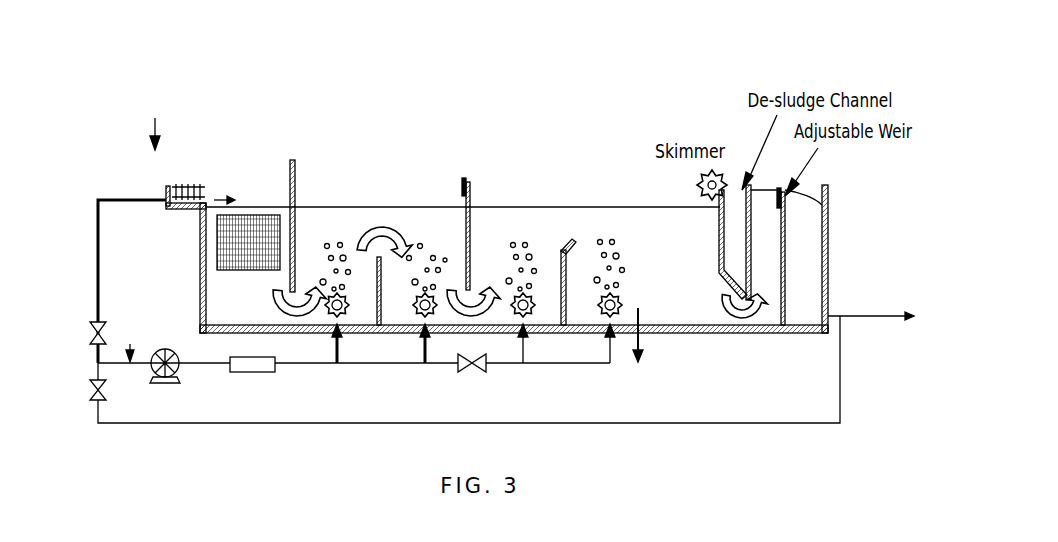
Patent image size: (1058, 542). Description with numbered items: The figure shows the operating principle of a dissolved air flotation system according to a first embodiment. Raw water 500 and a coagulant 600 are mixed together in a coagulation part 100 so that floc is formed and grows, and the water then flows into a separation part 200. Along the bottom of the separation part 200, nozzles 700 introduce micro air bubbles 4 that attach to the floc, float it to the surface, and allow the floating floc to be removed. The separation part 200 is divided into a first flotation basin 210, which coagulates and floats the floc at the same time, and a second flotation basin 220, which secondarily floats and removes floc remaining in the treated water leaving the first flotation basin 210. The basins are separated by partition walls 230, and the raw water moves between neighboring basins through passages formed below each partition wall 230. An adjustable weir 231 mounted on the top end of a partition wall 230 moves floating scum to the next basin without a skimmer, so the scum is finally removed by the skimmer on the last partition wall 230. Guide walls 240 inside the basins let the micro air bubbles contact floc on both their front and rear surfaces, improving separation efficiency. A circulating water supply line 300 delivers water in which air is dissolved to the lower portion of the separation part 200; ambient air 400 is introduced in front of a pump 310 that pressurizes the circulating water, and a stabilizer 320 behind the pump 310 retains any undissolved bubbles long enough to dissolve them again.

The micro air bubbles 4 is at (327, 246).
The coagulation part 100 is at (288, 78).
The separation part 200 is at (823, 78).
The first flotation basin 210 is at (380, 186).
The second flotation basin 220 is at (620, 166).
The partition wall 230 is at (471, 228).
The adjustable weir 231 is at (474, 172).
The guide wall 240 is at (383, 272).
The circulating water supply line 300 is at (692, 423).
The pump 310 is at (168, 382).
The stabilizer 320 is at (252, 373).
The ambient air 400 is at (354, 320).
The raw water 500 is at (185, 168).
The coagulant 600 is at (157, 107).
The nozzle 700 is at (350, 311).